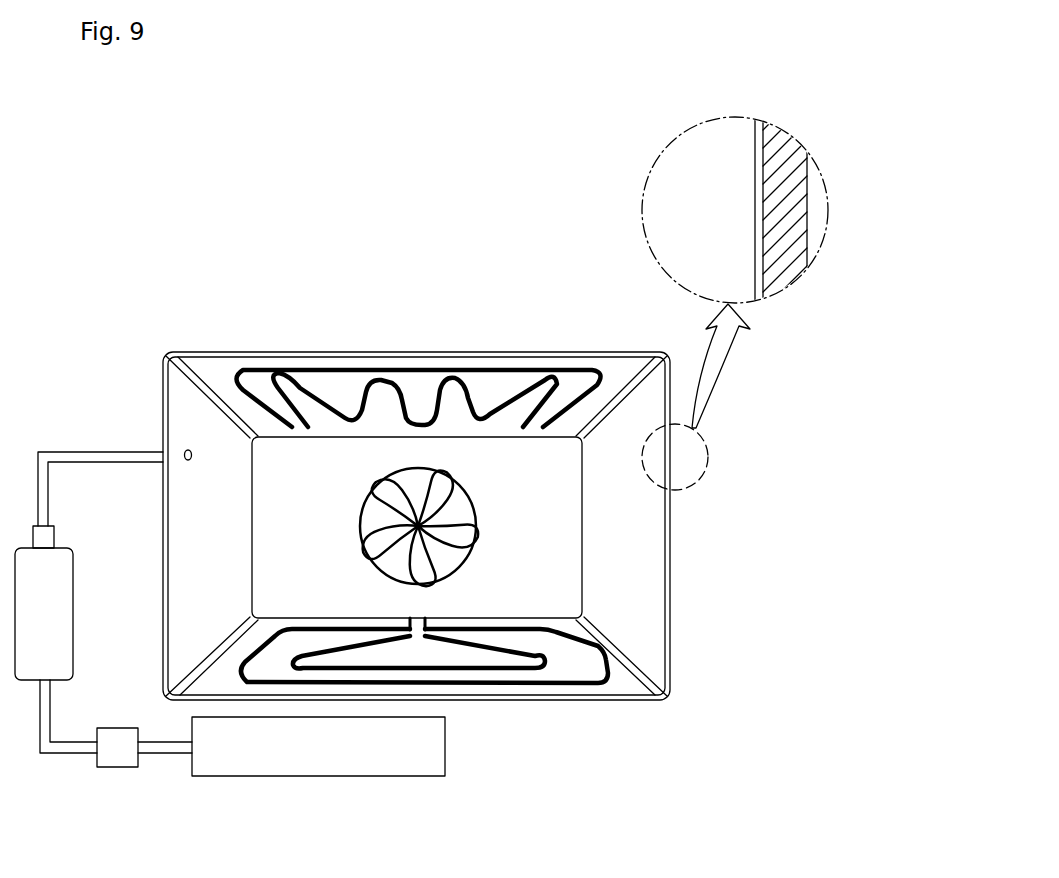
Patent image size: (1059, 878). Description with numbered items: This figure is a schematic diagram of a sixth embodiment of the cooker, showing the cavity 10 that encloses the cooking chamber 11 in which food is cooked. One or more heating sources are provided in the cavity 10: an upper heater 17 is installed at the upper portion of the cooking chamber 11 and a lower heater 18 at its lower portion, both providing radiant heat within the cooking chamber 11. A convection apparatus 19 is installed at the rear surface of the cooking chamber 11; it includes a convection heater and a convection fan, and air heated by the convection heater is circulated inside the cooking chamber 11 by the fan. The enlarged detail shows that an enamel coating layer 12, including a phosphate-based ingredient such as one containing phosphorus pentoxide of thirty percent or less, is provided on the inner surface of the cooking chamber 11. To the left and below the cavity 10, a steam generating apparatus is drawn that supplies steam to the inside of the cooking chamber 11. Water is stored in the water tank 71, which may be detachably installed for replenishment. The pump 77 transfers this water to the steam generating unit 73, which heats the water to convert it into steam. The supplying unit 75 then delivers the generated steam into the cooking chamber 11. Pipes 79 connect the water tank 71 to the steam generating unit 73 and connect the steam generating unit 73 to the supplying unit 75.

The cavity 10 is at (458, 333).
The cooking chamber 11 is at (555, 545).
The enamel coating layer 12 is at (757, 158).
The upper heater 17 is at (344, 370).
The lower heater 18 is at (541, 683).
The convection apparatus 19 is at (500, 513).
The water tank 71 is at (321, 777).
The steam generating unit 73 is at (74, 602).
The supplying unit 75 is at (192, 451).
The pump 77 is at (117, 768).
The pipes 79 is at (103, 450).